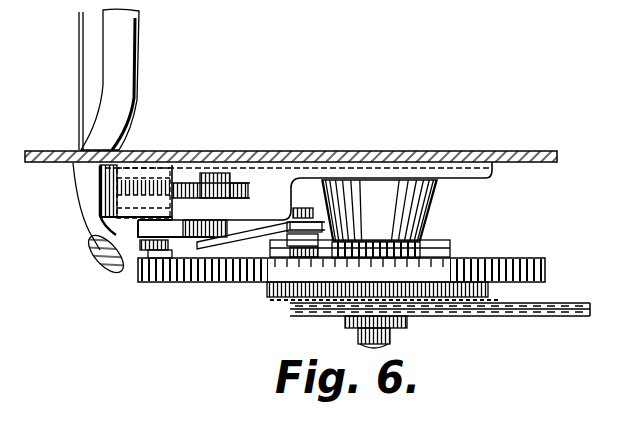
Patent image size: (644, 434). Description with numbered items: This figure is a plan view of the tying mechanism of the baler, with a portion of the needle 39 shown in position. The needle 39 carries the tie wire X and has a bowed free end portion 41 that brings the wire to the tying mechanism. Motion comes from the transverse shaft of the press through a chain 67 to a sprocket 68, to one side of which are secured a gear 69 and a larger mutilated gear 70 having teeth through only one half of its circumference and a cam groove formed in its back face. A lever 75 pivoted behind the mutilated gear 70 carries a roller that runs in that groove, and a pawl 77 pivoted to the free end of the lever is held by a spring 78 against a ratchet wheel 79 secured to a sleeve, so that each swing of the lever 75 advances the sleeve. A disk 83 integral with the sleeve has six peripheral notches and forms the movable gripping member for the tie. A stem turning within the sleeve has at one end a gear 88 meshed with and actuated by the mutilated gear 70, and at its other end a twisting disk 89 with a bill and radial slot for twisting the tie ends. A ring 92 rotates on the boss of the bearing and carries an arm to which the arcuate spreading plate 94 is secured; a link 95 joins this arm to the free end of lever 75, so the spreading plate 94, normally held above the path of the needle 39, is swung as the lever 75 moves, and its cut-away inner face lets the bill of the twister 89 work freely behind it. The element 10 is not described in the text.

The tie wire X is at (80, 108).
The needle 39 is at (133, 62).
The bowed end portion 41 is at (79, 201).
The hook tip 10 is at (96, 255).
The arcuate spreading plate 94 is at (149, 170).
The disk 83 is at (184, 182).
The twisting disk 89 is at (209, 176).
The link 95 is at (246, 233).
The lever 75 is at (301, 226).
The spring 78 is at (332, 216).
The ratchet wheel 79 is at (148, 251).
The gear 88 is at (185, 261).
The ring 92 is at (212, 238).
The pawl 77 is at (254, 252).
The mutilated gear 70 is at (534, 262).
The gear 69 is at (483, 298).
The chain 67 is at (586, 305).
The sprocket 68 is at (326, 306).